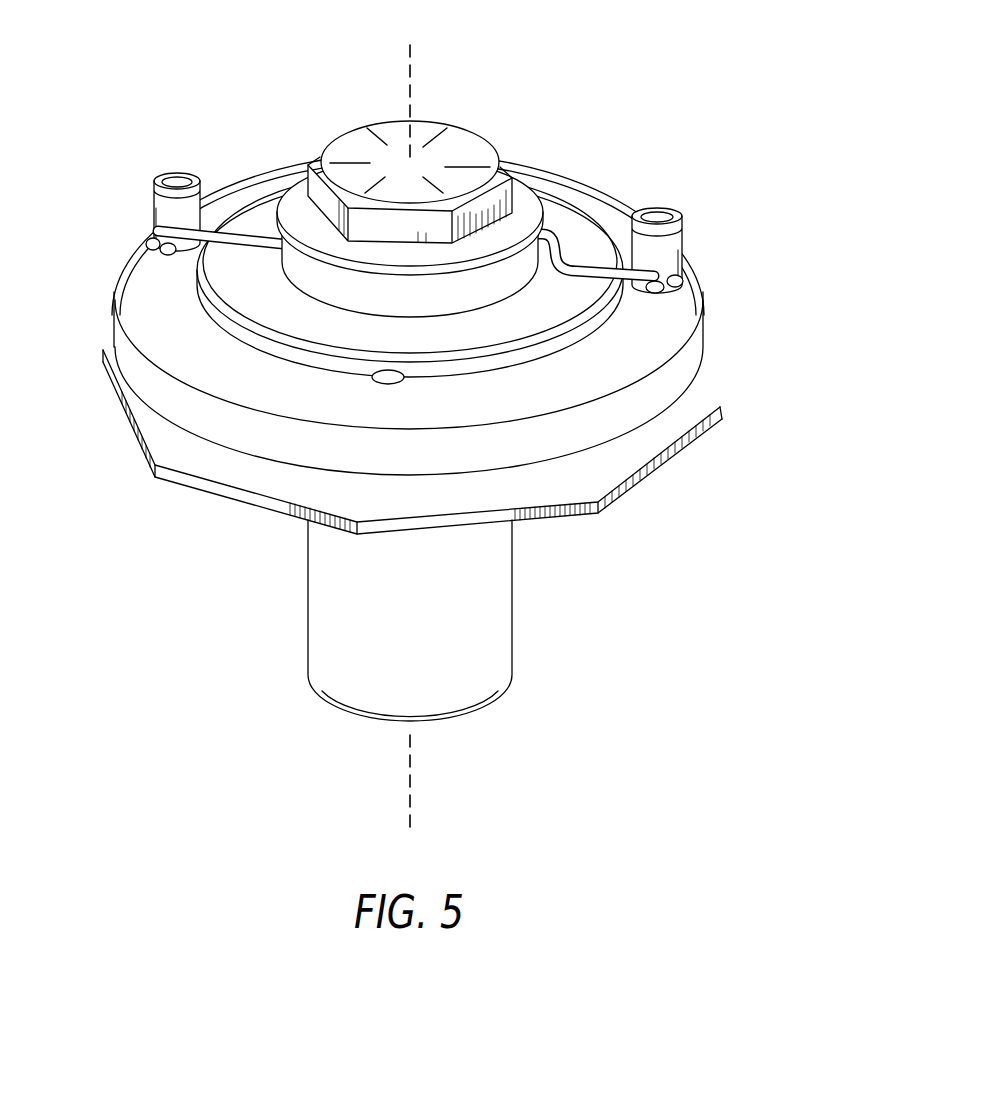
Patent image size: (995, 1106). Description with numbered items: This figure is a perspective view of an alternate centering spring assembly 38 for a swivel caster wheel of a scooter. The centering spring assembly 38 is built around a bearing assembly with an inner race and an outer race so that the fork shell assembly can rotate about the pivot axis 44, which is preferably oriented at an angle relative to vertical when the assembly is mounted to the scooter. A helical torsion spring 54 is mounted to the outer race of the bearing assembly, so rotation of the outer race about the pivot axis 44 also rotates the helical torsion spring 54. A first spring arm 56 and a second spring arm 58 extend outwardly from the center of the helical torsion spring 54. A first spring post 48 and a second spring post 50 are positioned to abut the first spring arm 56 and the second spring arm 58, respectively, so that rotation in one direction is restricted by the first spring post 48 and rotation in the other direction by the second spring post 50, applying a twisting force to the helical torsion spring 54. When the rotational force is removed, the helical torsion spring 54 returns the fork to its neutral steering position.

The centering spring assembly 38 is at (682, 158).
The pivot axis 44 is at (410, 87).
The first spring post 48 is at (153, 202).
The second spring post 50 is at (678, 232).
The helical torsion spring 54 is at (313, 273).
The first spring arm 56 is at (258, 235).
The second spring arm 58 is at (580, 267).